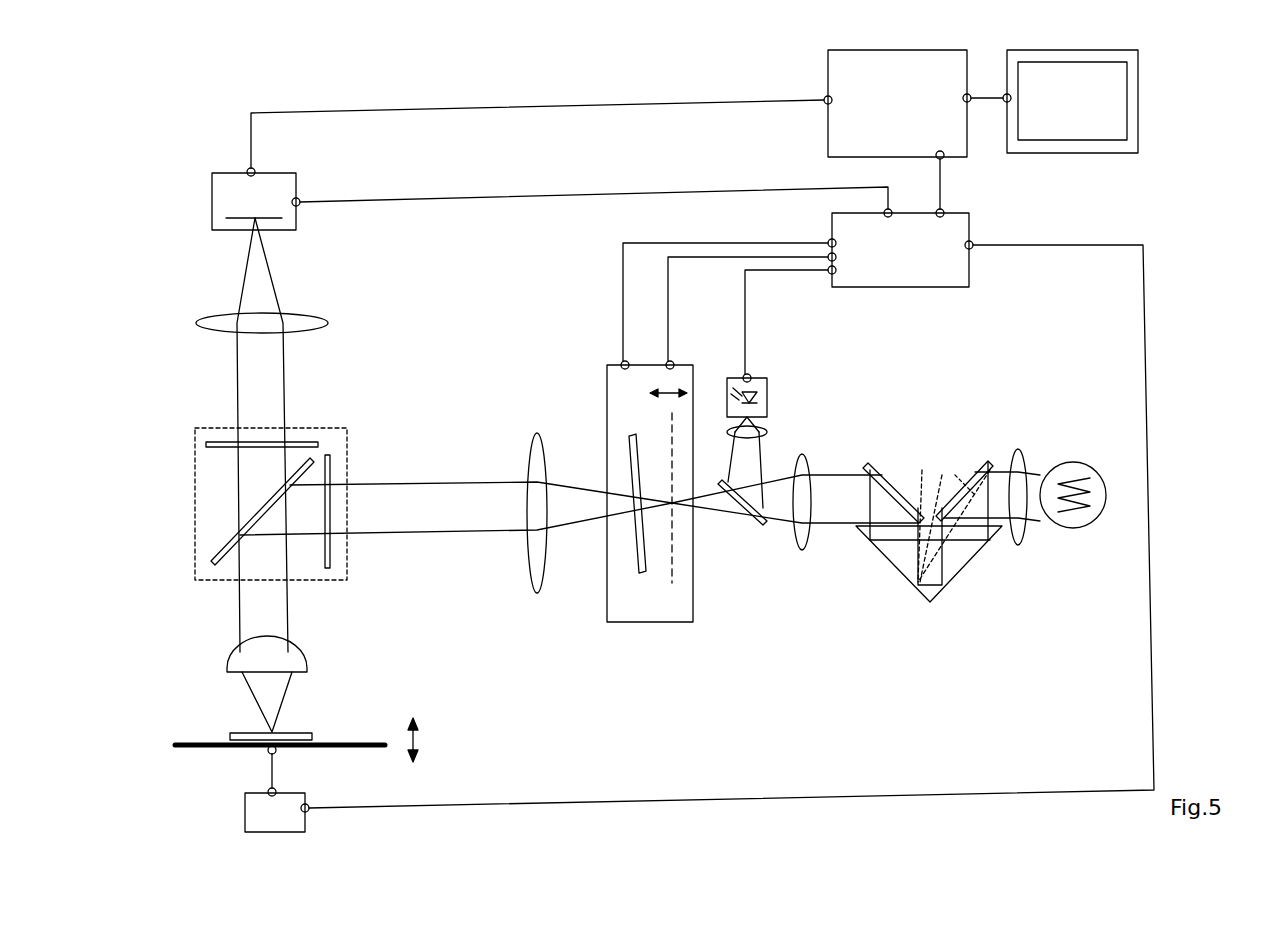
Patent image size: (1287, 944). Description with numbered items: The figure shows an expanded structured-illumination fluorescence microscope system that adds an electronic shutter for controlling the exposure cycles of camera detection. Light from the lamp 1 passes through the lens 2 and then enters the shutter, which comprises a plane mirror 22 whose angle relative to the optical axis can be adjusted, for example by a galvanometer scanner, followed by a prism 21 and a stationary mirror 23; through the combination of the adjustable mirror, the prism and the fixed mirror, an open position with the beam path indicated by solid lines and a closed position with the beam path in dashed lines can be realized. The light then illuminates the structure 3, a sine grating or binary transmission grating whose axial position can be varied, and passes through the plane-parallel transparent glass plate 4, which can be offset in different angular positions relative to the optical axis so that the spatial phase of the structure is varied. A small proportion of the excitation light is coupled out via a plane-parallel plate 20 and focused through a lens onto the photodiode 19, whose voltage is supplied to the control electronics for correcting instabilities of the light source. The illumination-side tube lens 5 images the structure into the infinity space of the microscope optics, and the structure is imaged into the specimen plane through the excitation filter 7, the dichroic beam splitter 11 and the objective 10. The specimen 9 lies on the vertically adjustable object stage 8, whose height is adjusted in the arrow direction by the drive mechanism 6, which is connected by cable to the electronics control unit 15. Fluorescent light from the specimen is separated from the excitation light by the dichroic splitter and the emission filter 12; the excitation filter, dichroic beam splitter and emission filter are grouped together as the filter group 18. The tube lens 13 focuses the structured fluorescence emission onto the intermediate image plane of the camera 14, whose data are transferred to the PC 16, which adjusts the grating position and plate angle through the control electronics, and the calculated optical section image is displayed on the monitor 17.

The lamp 1 is at (1073, 530).
The lens 2 is at (805, 552).
The structure 3 is at (672, 577).
The plane-parallel transparent glass plate 4 is at (640, 578).
The illumination-side tube lens 5 is at (530, 575).
The drive mechanism 6 is at (245, 822).
The excitation filter 7 is at (329, 568).
The object stage 8 is at (190, 745).
The specimen 9 is at (312, 735).
The objective 10 is at (227, 660).
The dichroic beam splitter 11 is at (211, 563).
The emission filter 12 is at (206, 445).
The tube lens 13 is at (200, 325).
The camera 14 is at (212, 215).
The electronics control unit 15 is at (897, 288).
The PC 16 is at (968, 152).
The monitor 17 is at (1115, 165).
The filter group 18 is at (347, 574).
The detector 19 is at (767, 376).
The plane-parallel plate 20 is at (758, 526).
The prism 21 is at (980, 550).
The plane mirror 22 is at (940, 500).
The stationary mirror 23 is at (882, 475).